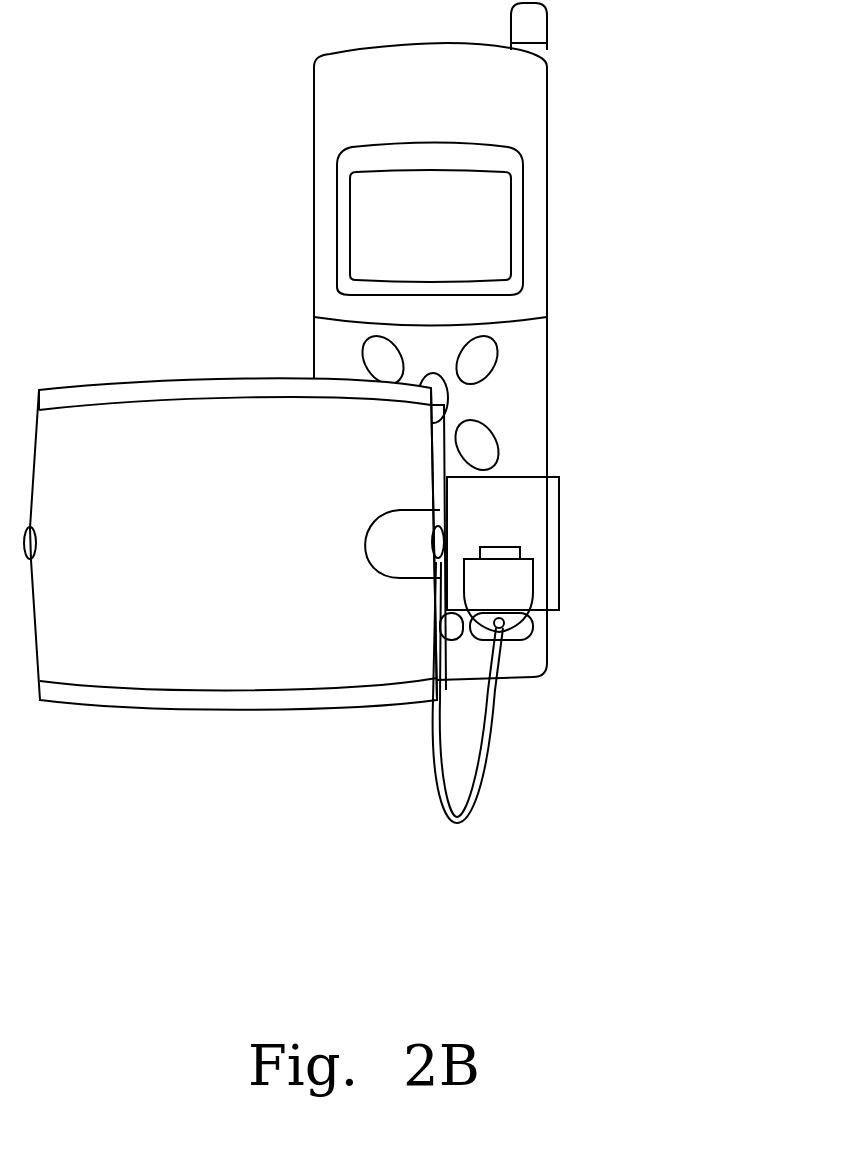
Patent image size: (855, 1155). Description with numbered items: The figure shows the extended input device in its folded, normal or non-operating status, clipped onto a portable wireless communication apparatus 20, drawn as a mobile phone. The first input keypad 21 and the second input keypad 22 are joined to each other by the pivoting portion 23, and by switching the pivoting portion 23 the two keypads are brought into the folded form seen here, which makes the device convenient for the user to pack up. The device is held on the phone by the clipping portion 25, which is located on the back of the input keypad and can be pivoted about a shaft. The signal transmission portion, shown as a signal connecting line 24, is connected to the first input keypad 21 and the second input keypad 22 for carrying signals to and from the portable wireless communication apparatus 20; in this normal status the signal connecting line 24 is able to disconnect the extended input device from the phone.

The portable wireless communication apparatus 20 is at (337, 110).
The first input keypad 21 is at (147, 392).
The second input keypad 22 is at (247, 433).
The pivoting portion 23 is at (443, 473).
The signal connecting line 24 is at (493, 722).
The clipping portion 25 is at (508, 522).